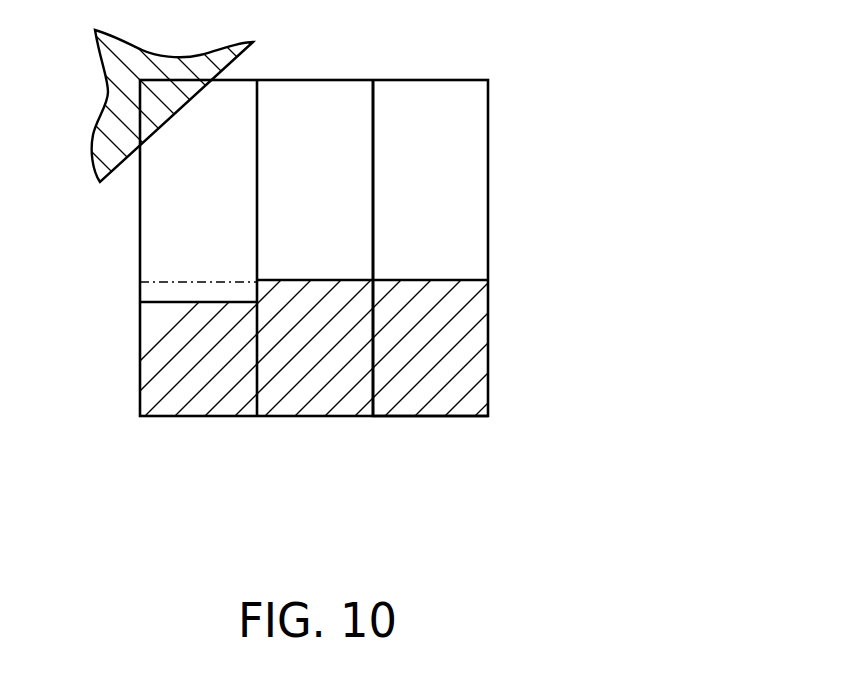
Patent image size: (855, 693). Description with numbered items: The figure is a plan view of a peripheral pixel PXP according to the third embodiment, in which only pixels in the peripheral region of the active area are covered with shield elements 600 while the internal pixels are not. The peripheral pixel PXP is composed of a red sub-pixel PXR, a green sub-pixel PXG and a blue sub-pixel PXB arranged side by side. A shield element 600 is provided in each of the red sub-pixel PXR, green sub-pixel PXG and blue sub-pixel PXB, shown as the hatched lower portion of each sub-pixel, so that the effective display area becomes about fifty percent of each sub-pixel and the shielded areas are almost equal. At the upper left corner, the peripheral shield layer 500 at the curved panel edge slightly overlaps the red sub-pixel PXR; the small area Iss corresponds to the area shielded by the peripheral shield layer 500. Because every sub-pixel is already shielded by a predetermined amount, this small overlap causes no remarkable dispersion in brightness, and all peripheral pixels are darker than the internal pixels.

The peripheral shield layer 500 is at (252, 43).
The shield element 600 is at (167, 323).
The small area Iss is at (167, 292).
The red sub-pixel PXR is at (197, 440).
The green sub-pixel PXG is at (317, 440).
The blue sub-pixel PXB is at (435, 440).
The peripheral pixel PXP is at (492, 488).